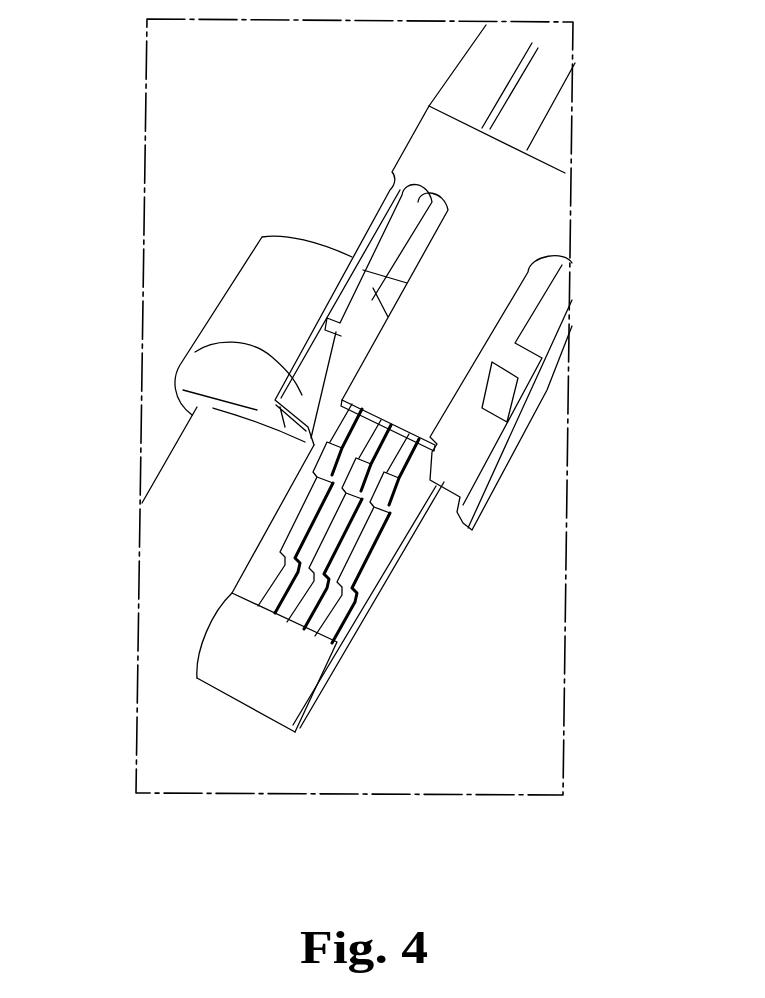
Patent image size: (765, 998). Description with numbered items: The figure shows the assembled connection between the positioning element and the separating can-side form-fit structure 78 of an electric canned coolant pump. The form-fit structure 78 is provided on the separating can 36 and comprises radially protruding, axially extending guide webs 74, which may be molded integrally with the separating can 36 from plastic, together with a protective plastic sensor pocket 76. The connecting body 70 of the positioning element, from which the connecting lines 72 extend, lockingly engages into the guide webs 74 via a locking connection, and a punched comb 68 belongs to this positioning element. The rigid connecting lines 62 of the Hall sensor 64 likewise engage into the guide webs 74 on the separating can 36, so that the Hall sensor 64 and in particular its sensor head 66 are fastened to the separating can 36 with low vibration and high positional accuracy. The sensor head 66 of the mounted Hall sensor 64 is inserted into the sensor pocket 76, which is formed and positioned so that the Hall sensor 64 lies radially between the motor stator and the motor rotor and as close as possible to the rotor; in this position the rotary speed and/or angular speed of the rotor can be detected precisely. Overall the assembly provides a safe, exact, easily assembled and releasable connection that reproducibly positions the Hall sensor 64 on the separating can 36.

The connecting lines 72 is at (538, 88).
The connecting body 70 is at (493, 241).
The form-fit structure 78 is at (195, 352).
The separating can 36 is at (206, 502).
The connecting lines 62 is at (362, 552).
The guide webs 74 is at (362, 622).
The sensor pocket 76 is at (235, 652).
The sensor head 66 is at (300, 692).
The punched comb 68 is at (430, 522).
The Hall sensor 64 is at (203, 732).